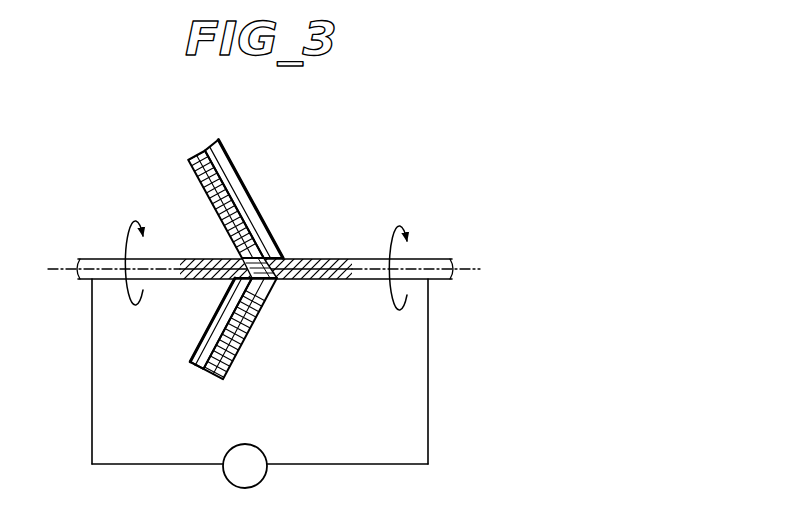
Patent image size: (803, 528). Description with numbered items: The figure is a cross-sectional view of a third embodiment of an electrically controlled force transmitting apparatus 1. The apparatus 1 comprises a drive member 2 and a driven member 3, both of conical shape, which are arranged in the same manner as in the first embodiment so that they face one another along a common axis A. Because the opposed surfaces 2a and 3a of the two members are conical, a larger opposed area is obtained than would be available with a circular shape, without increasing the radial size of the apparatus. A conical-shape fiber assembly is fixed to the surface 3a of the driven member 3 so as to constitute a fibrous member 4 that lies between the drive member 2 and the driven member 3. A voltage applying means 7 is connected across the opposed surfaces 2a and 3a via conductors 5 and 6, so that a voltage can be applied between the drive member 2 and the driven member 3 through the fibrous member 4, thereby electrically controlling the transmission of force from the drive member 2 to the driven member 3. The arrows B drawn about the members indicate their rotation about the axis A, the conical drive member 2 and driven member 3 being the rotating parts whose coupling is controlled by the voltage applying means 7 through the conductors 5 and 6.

The electrically controlled force transmitting apparatus 1 is at (305, 193).
The drive member 2 is at (252, 194).
The opposed surface of the drive member 2a is at (203, 158).
The driven member 3 is at (207, 324).
The opposed surface of the driven member 3a is at (203, 371).
The fibrous member 4 is at (261, 312).
The conductor 5 is at (428, 404).
The conductor 6 is at (92, 404).
The voltage applying means 7 is at (260, 450).
The rotation axis A is at (467, 267).
The rotation direction B is at (266, 252).